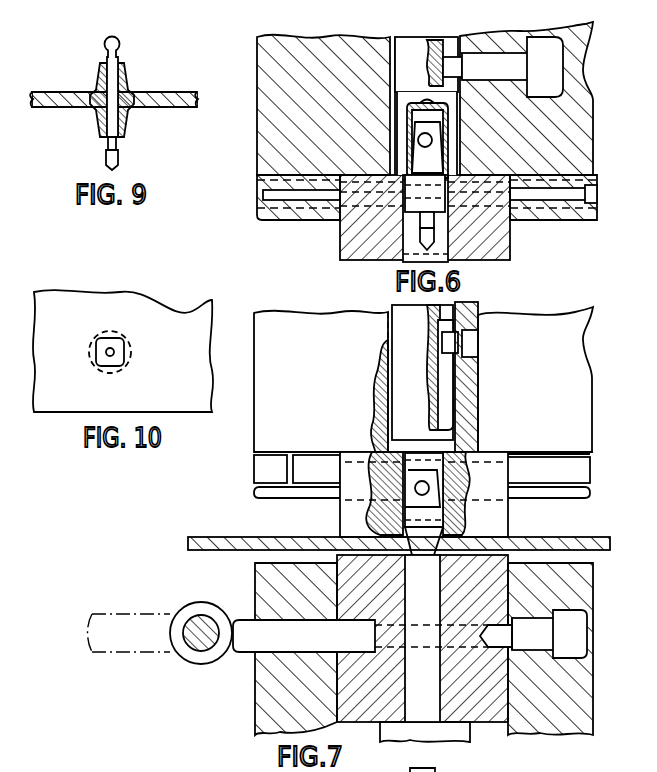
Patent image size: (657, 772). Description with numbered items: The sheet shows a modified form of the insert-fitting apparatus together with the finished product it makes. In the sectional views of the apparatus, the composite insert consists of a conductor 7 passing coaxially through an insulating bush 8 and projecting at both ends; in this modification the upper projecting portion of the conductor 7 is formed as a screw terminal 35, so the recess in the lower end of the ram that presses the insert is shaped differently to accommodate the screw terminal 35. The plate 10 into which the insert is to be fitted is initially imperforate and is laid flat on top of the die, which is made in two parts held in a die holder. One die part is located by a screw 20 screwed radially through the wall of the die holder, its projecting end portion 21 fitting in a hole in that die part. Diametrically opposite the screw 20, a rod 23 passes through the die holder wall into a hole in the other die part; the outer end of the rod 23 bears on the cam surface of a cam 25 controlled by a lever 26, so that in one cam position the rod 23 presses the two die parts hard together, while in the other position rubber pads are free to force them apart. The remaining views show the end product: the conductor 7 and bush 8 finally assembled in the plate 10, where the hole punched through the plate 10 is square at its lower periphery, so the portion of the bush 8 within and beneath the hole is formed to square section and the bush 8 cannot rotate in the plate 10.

In FIG. 9, the conductor 7 is at (108, 62).
In FIG. 10, the conductor 7 is at (108, 347).
In FIG. 9, the insulating bush 8 is at (127, 77).
In FIG. 10, the insulating bush 8 is at (126, 368).
In FIG. 6, the insulating bush 8 is at (455, 180).
In FIG. 7, the insulating bush 8 is at (450, 532).
In FIG. 9, the plate 10 is at (163, 94).
In FIG. 10, the plate 10 is at (158, 322).
In FIG. 7, the plate 10 is at (399, 543).
In FIG. 7, the screw 20 is at (540, 637).
In FIG. 7, the projecting end portion 21 is at (530, 652).
In FIG. 7, the rod 23 is at (246, 648).
In FIG. 7, the cam 25 is at (197, 610).
In FIG. 7, the lever 26 is at (121, 642).
In FIG. 6, the screw terminal 35 is at (372, 192).
In FIG. 7, the screw terminal 35 is at (392, 507).